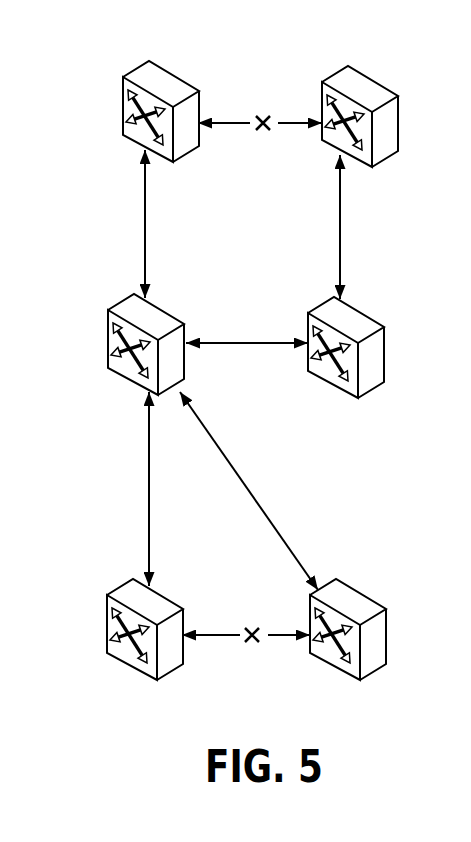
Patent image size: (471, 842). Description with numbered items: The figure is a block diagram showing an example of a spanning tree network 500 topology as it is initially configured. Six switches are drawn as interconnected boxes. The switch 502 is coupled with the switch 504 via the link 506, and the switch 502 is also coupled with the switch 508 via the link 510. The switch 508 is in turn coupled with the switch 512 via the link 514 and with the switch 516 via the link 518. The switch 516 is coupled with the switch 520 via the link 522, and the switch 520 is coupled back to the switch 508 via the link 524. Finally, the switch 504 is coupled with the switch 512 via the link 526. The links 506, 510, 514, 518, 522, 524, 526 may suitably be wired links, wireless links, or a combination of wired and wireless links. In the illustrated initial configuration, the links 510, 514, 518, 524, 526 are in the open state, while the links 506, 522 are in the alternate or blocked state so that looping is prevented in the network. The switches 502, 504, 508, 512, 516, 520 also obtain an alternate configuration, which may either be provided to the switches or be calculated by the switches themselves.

The spanning tree network 500 is at (222, 22).
The switch 502 is at (185, 159).
The switch 504 is at (353, 153).
The link 506 is at (260, 135).
The switch 508 is at (107, 357).
The link 510 is at (145, 248).
The switch 512 is at (348, 398).
The link 514 is at (250, 345).
The switch 516 is at (107, 620).
The link 518 is at (149, 488).
The switch 520 is at (366, 597).
The link 522 is at (252, 626).
The link 524 is at (260, 500).
The link 526 is at (340, 247).